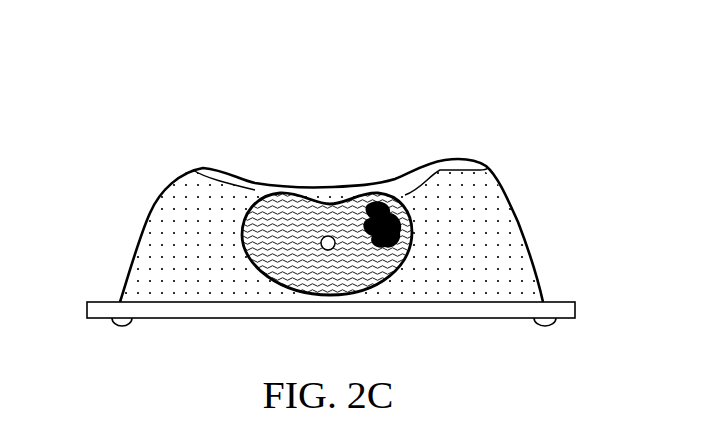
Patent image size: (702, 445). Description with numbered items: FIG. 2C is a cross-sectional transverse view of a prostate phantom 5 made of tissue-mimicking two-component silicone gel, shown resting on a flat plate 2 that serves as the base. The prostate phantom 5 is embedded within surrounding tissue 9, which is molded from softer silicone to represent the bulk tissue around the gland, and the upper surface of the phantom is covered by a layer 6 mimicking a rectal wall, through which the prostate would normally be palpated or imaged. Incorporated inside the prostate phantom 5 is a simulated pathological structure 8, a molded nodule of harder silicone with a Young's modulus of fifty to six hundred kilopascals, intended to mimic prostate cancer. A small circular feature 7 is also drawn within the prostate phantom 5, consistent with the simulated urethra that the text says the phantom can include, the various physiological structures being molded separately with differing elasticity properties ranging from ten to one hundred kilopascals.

The flat plate 2 is at (107, 300).
The prostate phantom 5 is at (283, 212).
The layer mimicking a rectal wall 6 is at (330, 198).
The marker point 7 is at (333, 237).
The simulated pathological structure 8 is at (396, 206).
The surrounding tissue 9 is at (478, 213).